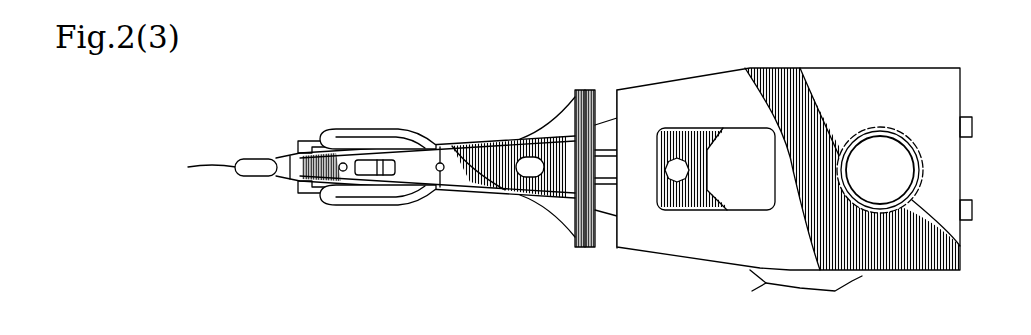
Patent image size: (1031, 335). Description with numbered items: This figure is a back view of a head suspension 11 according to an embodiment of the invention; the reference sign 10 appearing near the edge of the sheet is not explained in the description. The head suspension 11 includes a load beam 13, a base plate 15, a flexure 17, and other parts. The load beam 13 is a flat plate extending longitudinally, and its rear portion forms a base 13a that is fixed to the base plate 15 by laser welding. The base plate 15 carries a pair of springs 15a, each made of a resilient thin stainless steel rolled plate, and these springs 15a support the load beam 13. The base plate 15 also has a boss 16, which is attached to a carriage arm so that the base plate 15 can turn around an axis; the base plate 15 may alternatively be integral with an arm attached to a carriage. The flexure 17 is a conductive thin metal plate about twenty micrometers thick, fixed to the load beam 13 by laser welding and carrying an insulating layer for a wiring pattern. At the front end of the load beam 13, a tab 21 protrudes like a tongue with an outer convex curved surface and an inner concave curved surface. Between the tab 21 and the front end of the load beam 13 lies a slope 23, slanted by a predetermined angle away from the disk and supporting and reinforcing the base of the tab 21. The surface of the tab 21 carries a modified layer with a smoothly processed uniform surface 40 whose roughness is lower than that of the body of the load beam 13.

The connector 10 is at (1015, 4).
The head suspension 11 is at (705, 66).
The load beam 13 is at (470, 141).
The base 13a is at (580, 90).
The base plate 15 is at (882, 80).
The springs 15a is at (603, 104).
The boss 16 is at (921, 172).
The flexure 17 is at (387, 129).
The tab 21 is at (198, 168).
The slope 23 is at (290, 4).
The smoothly processed uniform surface 40 is at (262, 160).